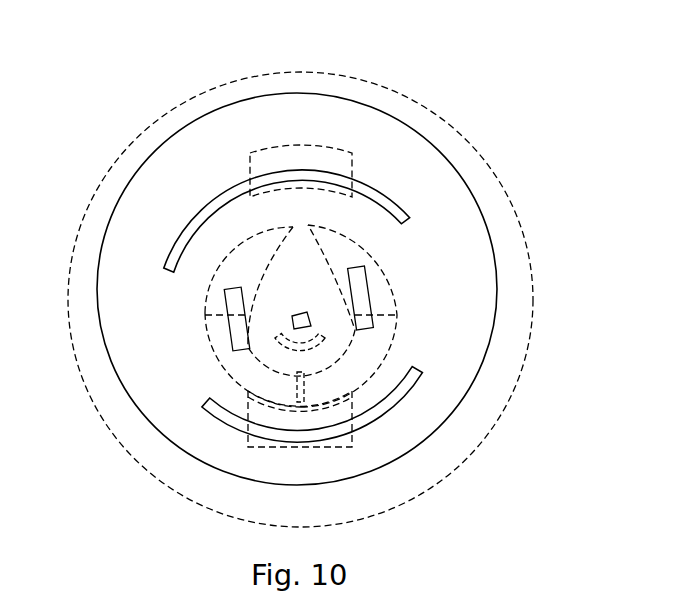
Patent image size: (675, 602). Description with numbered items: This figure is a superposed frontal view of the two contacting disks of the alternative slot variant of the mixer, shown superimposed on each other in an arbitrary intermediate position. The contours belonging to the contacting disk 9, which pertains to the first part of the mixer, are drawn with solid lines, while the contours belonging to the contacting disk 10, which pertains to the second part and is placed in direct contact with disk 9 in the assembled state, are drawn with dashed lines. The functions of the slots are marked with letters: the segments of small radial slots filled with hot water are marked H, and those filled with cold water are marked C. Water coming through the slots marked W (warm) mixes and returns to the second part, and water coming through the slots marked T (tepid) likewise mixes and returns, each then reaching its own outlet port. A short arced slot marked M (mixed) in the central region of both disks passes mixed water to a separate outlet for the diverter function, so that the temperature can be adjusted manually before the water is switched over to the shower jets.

The contacting disk 9 is at (418, 132).
The contacting disk 10 is at (485, 157).
The tepid water slots T is at (303, 146).
The warm water slots W is at (323, 452).
The cold water segments C is at (242, 245).
The hot water segments H is at (377, 262).
The mixed water slot M is at (311, 328).